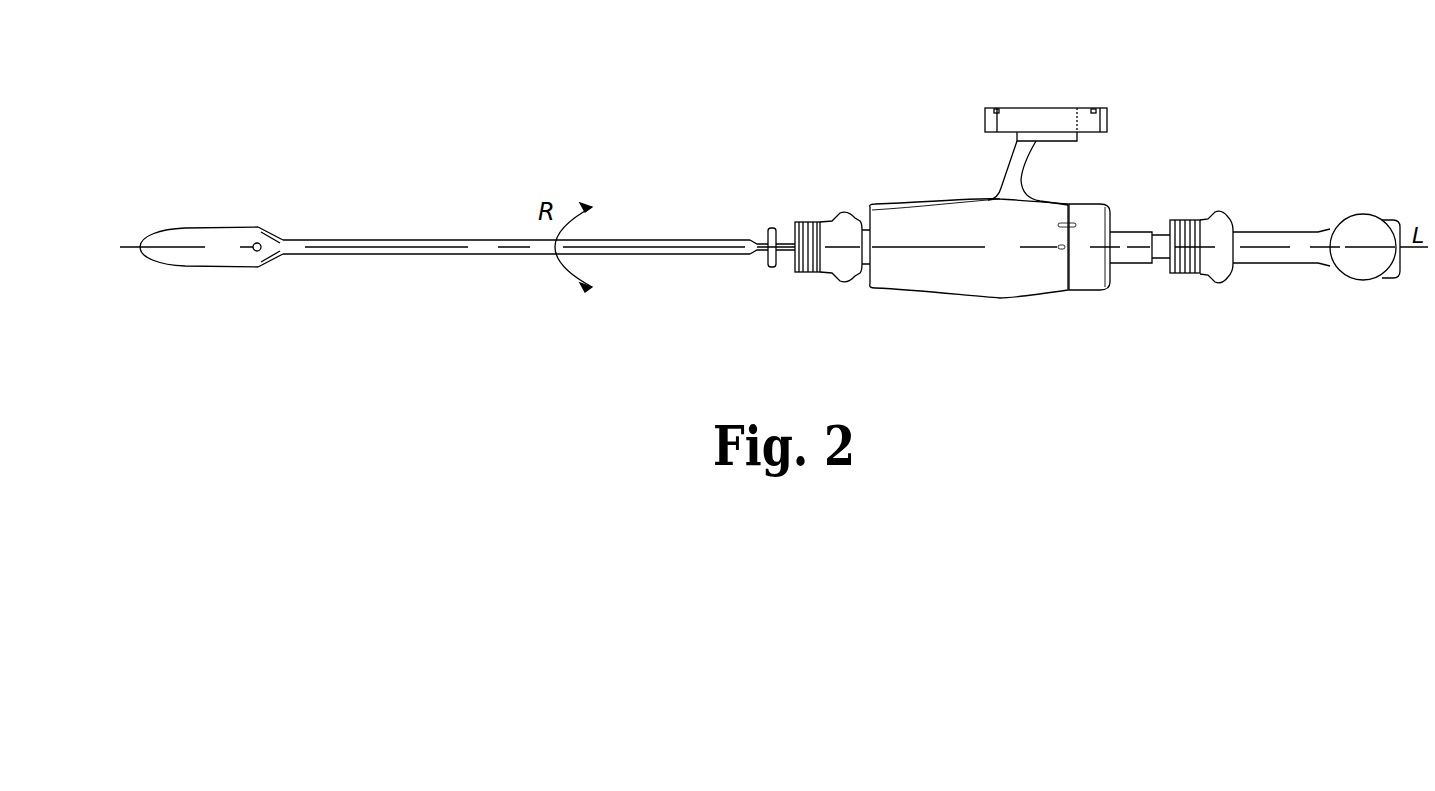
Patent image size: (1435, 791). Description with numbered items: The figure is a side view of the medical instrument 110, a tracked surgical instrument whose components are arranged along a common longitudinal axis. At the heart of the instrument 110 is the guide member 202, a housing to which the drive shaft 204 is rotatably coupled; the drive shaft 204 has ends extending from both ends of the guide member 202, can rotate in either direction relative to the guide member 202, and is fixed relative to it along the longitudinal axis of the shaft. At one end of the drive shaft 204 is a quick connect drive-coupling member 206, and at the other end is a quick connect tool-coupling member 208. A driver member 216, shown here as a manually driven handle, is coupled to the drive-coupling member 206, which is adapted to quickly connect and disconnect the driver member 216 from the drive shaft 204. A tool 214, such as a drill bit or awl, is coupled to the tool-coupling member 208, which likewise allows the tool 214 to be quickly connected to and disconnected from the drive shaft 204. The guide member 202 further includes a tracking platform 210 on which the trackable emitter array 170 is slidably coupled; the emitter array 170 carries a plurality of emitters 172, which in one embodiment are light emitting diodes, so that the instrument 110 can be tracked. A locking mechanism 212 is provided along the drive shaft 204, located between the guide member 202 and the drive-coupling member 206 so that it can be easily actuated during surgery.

The instrument 110 is at (1138, 105).
The trackable emitter array 170 is at (1016, 120).
The emitters 172 is at (995, 106).
The guide member 202 is at (980, 289).
The drive shaft 204 is at (1143, 258).
The quick connect drive-coupling member 206 is at (1215, 220).
The quick connect tool-coupling member 208 is at (838, 226).
The tracking platform 210 is at (1018, 155).
The locking mechanism 212 is at (1070, 296).
The tool 214 is at (389, 241).
The driver member 216 is at (1297, 238).